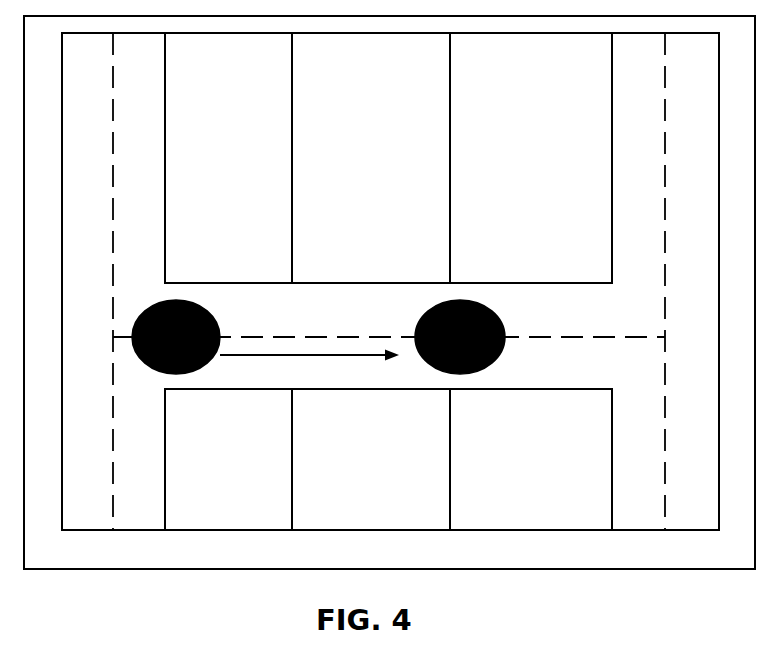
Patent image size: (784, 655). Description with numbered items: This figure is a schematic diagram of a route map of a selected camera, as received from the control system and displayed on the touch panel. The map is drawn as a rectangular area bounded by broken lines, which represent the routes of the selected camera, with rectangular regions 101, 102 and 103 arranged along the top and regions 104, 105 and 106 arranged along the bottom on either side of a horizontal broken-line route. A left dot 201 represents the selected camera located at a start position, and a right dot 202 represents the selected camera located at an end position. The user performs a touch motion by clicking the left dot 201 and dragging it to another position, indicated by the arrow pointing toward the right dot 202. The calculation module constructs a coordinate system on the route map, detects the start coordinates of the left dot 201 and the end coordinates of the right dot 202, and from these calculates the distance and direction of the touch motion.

The first region 101 is at (228, 158).
The second region 102 is at (371, 158).
The third region 103 is at (531, 158).
The fourth region 104 is at (228, 459).
The fifth region 105 is at (371, 459).
The sixth region 106 is at (531, 459).
The left dot 201 is at (176, 337).
The right dot 202 is at (460, 337).